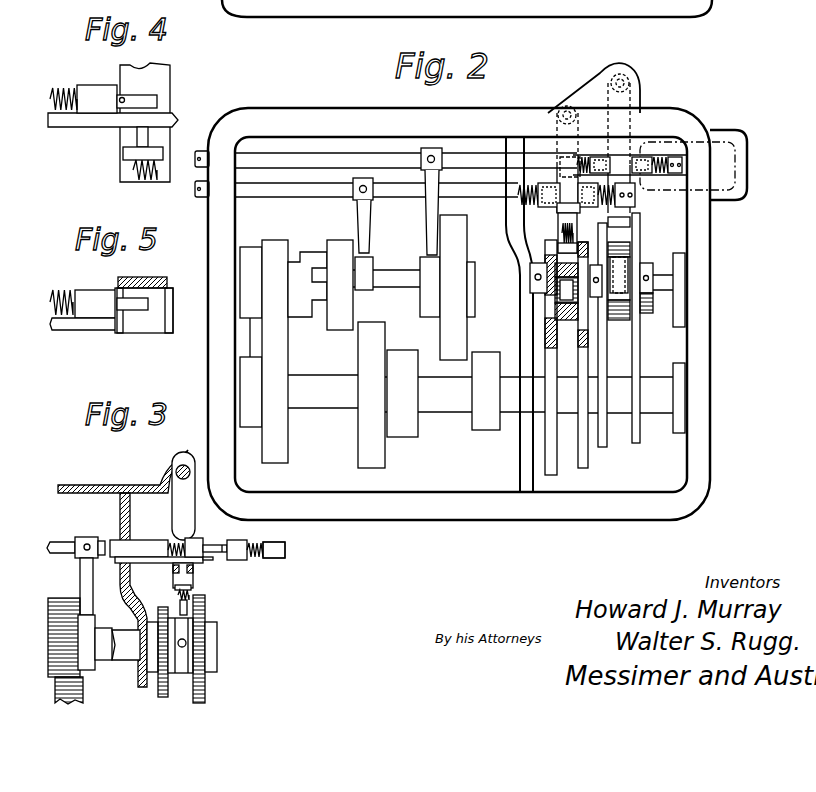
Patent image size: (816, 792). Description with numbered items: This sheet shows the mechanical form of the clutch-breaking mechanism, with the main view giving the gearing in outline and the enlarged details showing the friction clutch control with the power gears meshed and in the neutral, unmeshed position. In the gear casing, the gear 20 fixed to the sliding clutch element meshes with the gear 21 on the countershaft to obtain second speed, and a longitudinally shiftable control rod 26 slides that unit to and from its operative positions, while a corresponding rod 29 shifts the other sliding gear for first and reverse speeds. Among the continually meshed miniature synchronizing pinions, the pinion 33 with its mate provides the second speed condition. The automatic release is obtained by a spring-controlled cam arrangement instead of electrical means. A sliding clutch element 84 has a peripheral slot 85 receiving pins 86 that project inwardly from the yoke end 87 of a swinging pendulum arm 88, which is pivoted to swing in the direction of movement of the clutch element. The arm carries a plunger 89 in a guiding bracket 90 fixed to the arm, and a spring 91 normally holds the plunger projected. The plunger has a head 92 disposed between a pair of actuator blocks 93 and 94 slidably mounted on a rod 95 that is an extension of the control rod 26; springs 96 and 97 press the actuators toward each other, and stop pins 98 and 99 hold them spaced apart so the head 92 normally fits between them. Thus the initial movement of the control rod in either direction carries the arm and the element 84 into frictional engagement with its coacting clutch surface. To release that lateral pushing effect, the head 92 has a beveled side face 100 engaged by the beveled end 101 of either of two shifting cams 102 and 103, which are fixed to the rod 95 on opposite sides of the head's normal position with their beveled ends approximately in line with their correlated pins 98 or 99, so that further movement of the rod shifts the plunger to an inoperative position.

In FIG. 2, the gear 20 is at (320, 285).
In FIG. 2, the gear 21 is at (371, 395).
In FIG. 2, the control rod 26 is at (317, 193).
In FIG. 2, the control rod 29 is at (325, 157).
In FIG. 2, the pinion 33 is at (588, 462).
In FIG. 2, the sliding clutch element 84 is at (573, 317).
In FIG. 3, the peripheral slot 85 is at (183, 673).
In FIG. 2, the pins 86 is at (620, 312).
In FIG. 3, the pins 86 is at (52, 547).
In FIG. 2, the yoke end 87 is at (617, 267).
In FIG. 2, the pendulum arm 88 is at (560, 147).
In FIG. 2, the plunger 89 is at (562, 213).
In FIG. 2, the guiding bracket 90 is at (560, 244).
In FIG. 2, the spring 91 is at (558, 232).
In FIG. 4, the head 92 is at (120, 127).
In FIG. 3, the head 92 is at (194, 563).
In FIG. 3, the actuator block 93 is at (197, 540).
In FIG. 3, the actuator block 94 is at (243, 543).
In FIG. 3, the rod 95 is at (220, 555).
In FIG. 3, the spring 96 is at (173, 541).
In FIG. 3, the spring 97 is at (267, 543).
In FIG. 3, the stop pin 98 is at (213, 547).
In FIG. 3, the stop pin 99 is at (227, 547).
In FIG. 4, the beveled side face 100 is at (167, 118).
In FIG. 5, the beveled side face 100 is at (155, 320).
In FIG. 4, the beveled end 101 is at (110, 115).
In FIG. 4, the shifting cam 102 is at (67, 127).
In FIG. 3, the shifting cam 103 is at (269, 563).